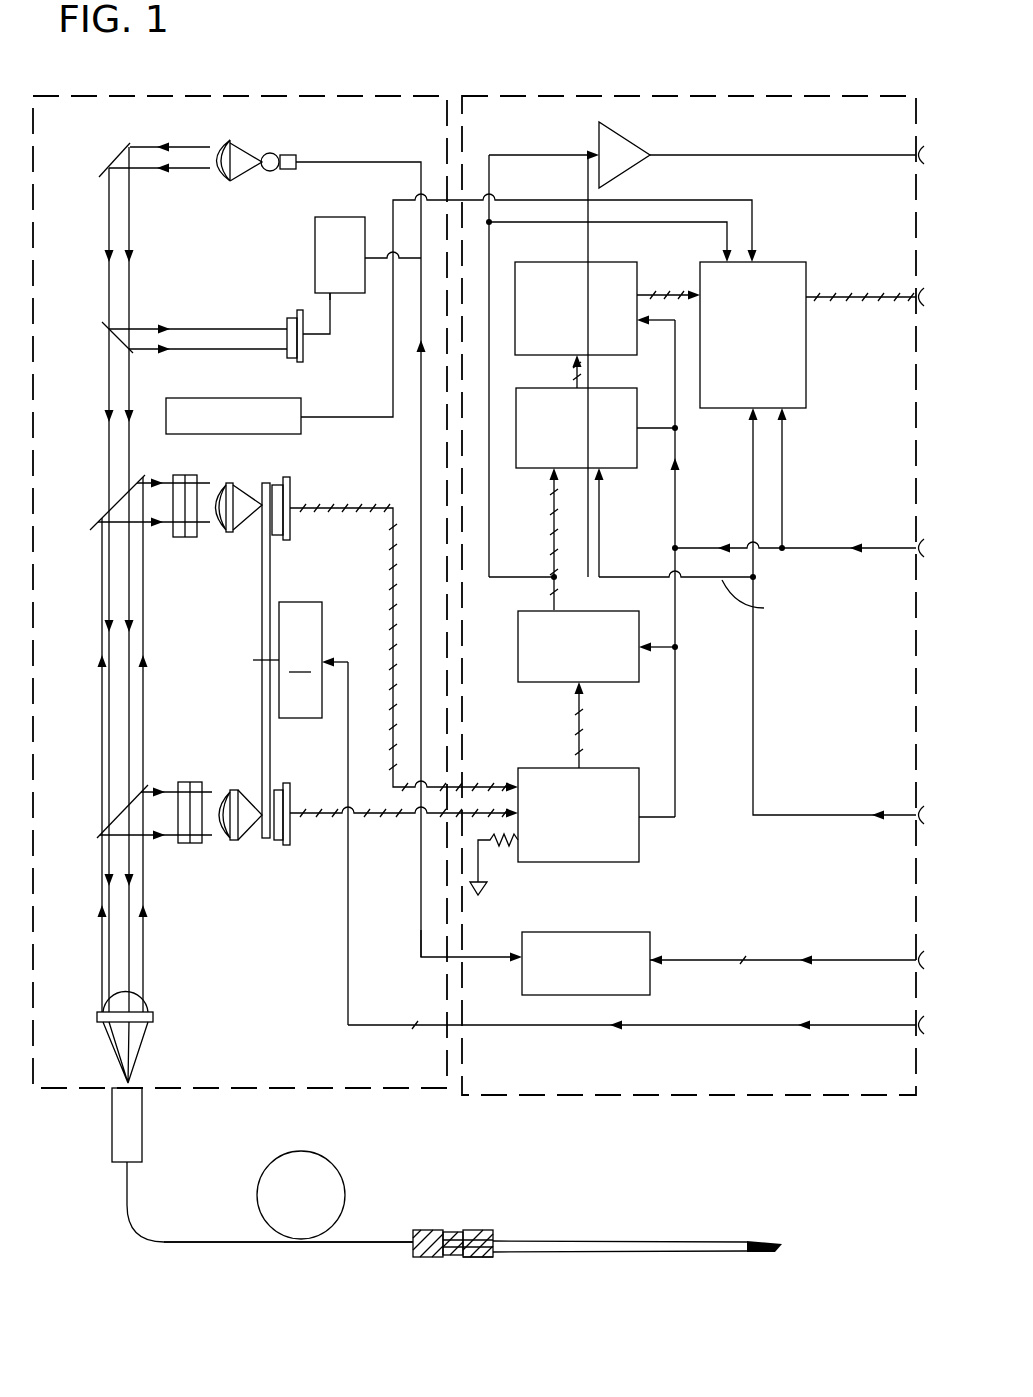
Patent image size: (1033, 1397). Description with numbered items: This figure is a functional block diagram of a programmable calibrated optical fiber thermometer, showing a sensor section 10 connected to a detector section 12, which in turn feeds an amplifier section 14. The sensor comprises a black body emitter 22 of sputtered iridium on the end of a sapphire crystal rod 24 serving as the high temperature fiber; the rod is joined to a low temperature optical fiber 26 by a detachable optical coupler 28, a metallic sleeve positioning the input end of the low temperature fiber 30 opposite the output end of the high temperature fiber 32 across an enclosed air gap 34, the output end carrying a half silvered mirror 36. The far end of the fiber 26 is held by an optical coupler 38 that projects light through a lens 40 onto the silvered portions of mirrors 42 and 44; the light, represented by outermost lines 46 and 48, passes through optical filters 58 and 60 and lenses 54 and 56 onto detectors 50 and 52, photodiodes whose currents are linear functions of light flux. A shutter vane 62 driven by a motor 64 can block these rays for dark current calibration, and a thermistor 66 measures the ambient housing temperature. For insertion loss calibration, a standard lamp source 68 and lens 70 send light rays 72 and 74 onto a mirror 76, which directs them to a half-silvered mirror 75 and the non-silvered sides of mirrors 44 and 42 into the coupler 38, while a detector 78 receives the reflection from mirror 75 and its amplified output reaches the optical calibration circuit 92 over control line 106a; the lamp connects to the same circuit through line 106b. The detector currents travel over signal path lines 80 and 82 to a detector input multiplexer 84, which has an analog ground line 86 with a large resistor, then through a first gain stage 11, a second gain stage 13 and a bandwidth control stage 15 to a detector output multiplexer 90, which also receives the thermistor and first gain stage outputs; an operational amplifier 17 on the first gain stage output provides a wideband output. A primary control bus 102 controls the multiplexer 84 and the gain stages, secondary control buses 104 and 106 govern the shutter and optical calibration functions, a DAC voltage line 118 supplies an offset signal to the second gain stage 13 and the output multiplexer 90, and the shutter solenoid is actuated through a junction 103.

The sensor section 10 is at (750, 1181).
The first gain stage 11 is at (535, 682).
The detector section 12 is at (372, 86).
The second gain stage 13 is at (540, 388).
The amplifier section 14 is at (828, 86).
The bandwidth control stage amplifier 15 is at (550, 262).
The operational amplifier 17 is at (597, 135).
The black body emitter 22 is at (764, 1254).
The sapphire crystal rod 24 is at (626, 1241).
The low temperature optical fiber 26 is at (370, 1242).
The detachable optical coupler 28 is at (480, 1230).
The input end of the low temperature fiber 30 is at (440, 1257).
The output end of the high temperature fiber 32 is at (478, 1257).
The air gap 34 is at (452, 1232).
The half silvered mirror 36 is at (453, 1257).
The optical coupler 38 is at (142, 1130).
The lens 40 is at (153, 1017).
The mirror 42 is at (100, 838).
The mirror 44 is at (100, 520).
The light ray line 46 is at (143, 955).
The light ray line 48 is at (102, 945).
The detector 50 is at (290, 505).
The detector 52 is at (292, 796).
The lens 54 is at (228, 483).
The lens 56 is at (232, 842).
The optical filter 58 is at (183, 537).
The optical filter 60 is at (188, 843).
The shutter vane 62 is at (270, 577).
The motor 64 is at (300, 813).
The thermistor 66 is at (218, 398).
The standard lamp source 68 is at (276, 154).
The lens 70 is at (230, 148).
The light ray line 72 is at (131, 216).
The light ray line 74 is at (107, 216).
The half-silvered mirror 75 is at (104, 333).
The mirror 76 is at (110, 153).
The detector 78 is at (305, 352).
The signal path line 80 is at (380, 508).
The signal path line 82 is at (388, 813).
The detector input multiplexer 84 is at (639, 846).
The analog ground line 86 is at (480, 874).
The detector output multiplexer 90 is at (806, 369).
The optical calibration circuit 92 is at (650, 945).
The primary control bus 102 is at (813, 548).
The junction 103 is at (527, 200).
The secondary control bus 104 is at (380, 1025).
The secondary control bus 106 is at (421, 938).
The control line 106a is at (368, 162).
The line 106b is at (322, 328).
The DAC voltage line 118 is at (753, 714).